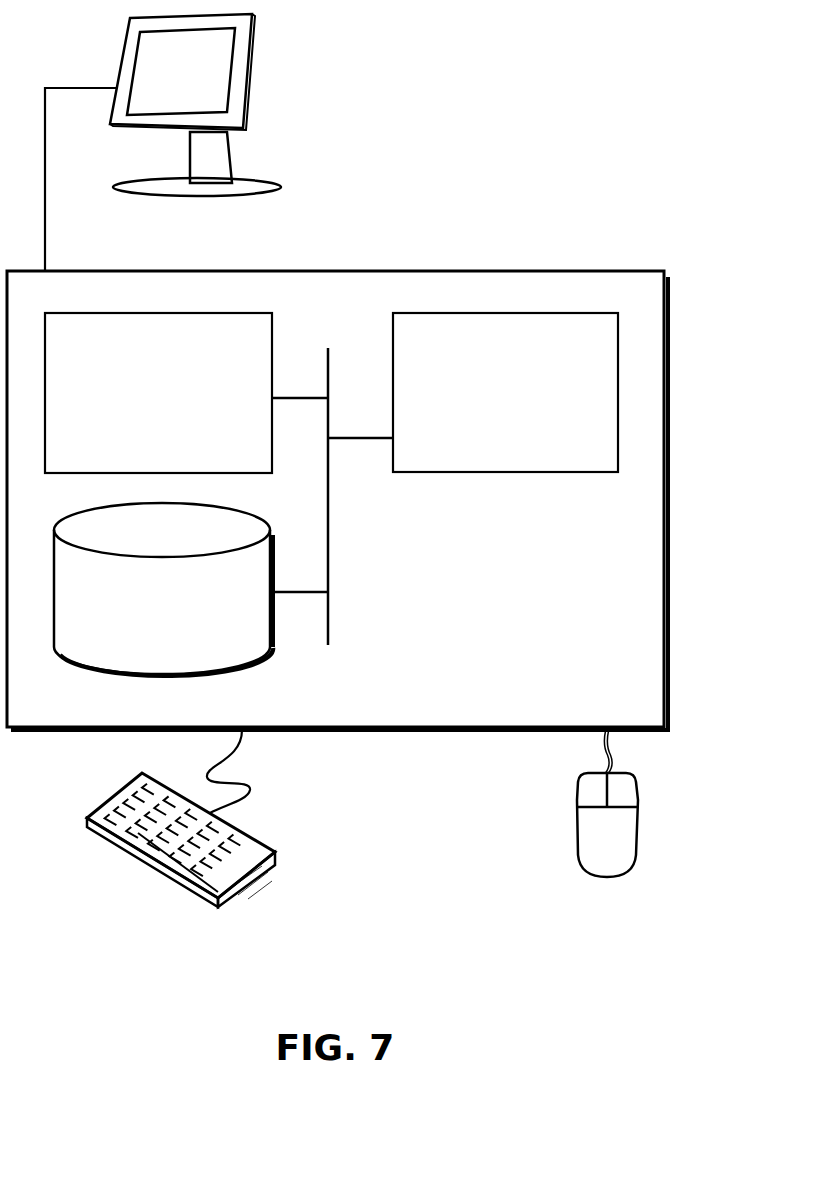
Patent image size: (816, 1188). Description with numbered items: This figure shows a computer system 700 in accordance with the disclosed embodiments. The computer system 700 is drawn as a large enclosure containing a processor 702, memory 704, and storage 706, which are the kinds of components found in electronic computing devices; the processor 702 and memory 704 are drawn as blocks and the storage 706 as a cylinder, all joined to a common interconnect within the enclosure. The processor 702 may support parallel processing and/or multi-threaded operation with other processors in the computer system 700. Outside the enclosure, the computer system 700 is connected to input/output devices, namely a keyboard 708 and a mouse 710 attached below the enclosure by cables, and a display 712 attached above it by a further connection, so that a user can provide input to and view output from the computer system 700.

The computer system 700 is at (382, 238).
The processor 702 is at (488, 404).
The memory 704 is at (138, 406).
The storage 706 is at (145, 616).
The keyboard 708 is at (107, 837).
The mouse 710 is at (585, 847).
The display 712 is at (163, 142).